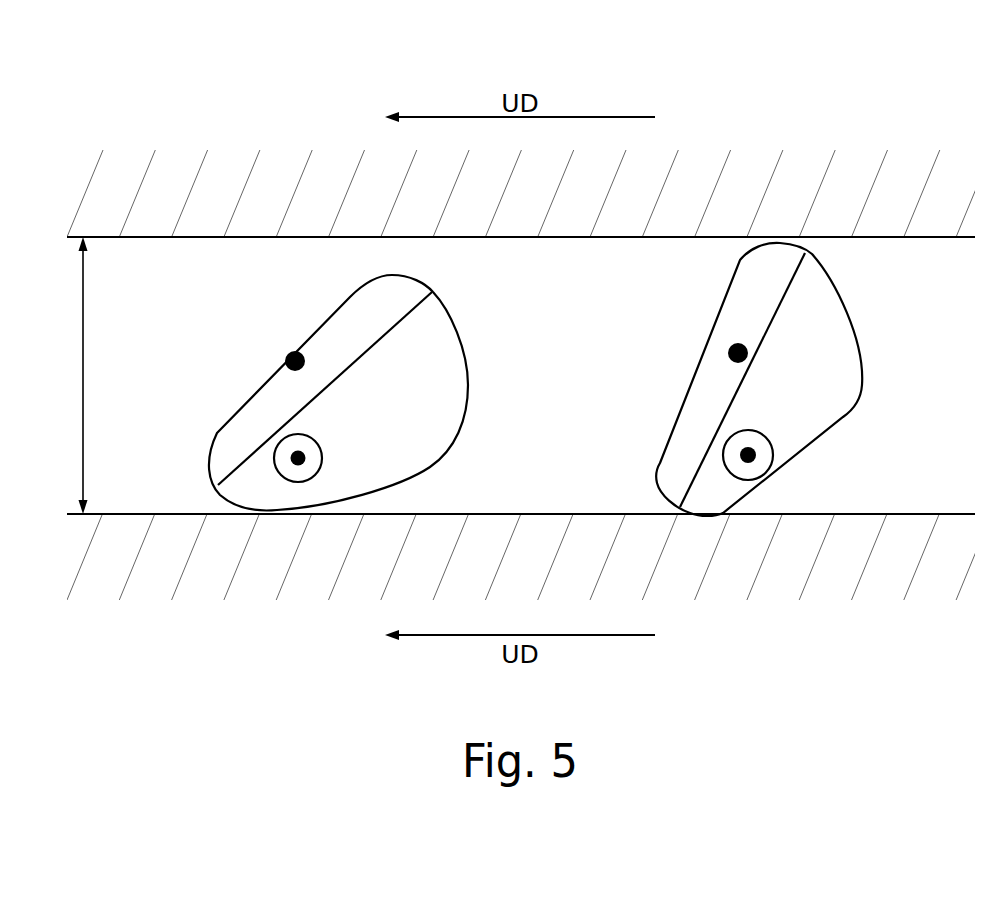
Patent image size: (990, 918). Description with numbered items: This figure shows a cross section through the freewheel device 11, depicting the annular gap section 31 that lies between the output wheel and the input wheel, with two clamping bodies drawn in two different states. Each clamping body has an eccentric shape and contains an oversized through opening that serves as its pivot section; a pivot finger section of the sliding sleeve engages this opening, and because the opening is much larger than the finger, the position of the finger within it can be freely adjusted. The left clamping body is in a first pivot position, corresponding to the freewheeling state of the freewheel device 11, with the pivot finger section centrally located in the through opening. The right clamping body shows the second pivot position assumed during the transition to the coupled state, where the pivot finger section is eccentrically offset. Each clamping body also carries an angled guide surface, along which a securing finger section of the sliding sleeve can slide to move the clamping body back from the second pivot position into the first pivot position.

The freewheel device 11 is at (905, 84).
The annular gap section 31 is at (99, 375).